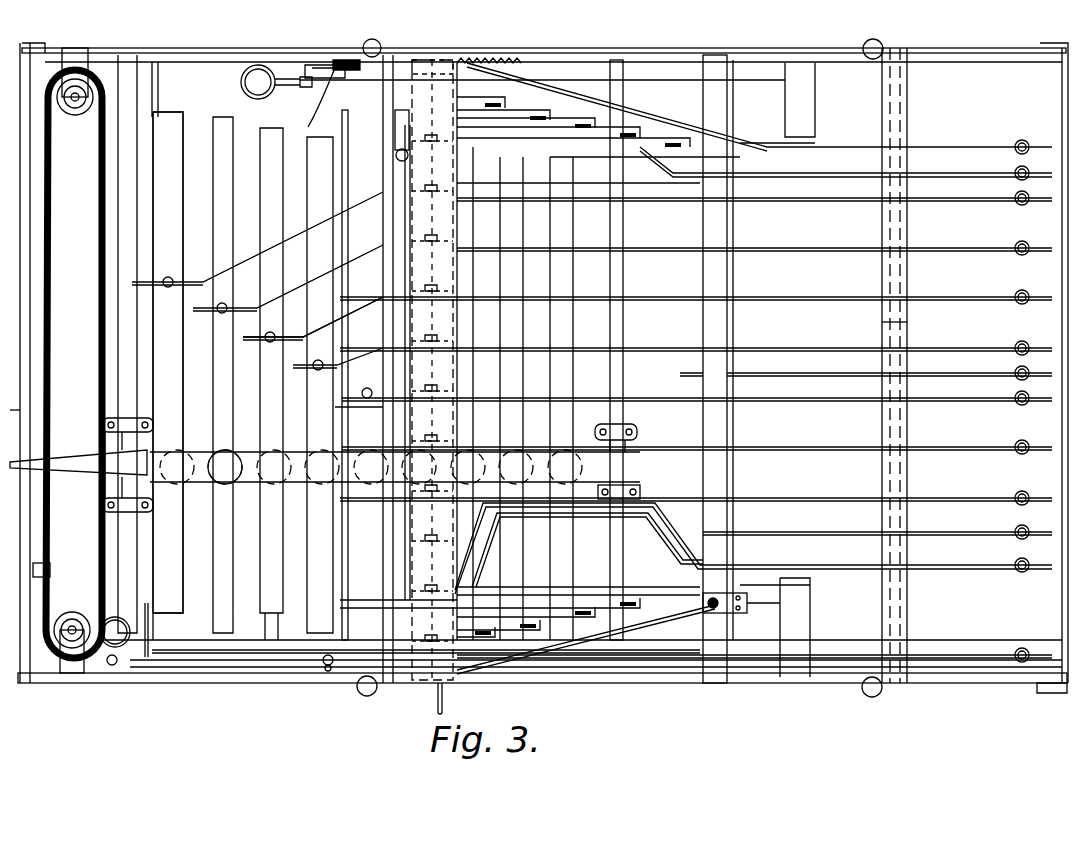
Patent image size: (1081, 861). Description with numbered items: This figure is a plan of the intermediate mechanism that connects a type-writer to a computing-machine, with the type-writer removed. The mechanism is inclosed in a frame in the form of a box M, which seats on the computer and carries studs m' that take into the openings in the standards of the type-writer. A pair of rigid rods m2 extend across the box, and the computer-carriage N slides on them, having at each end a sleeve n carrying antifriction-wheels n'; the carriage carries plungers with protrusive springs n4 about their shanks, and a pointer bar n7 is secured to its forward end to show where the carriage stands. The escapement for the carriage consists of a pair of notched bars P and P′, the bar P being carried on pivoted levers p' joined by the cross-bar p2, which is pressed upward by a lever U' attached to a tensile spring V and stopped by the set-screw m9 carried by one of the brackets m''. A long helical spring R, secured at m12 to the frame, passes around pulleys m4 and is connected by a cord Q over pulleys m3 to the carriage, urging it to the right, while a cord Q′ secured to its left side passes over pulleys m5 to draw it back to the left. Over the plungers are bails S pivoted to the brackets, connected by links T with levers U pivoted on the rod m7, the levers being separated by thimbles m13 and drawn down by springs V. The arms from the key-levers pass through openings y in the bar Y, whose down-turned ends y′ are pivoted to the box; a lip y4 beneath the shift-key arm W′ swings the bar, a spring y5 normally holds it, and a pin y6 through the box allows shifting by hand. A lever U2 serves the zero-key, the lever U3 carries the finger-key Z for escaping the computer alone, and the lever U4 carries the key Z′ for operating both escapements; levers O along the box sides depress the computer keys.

The lever O is at (118, 62).
The long helical spring R is at (74, 364).
The pulley m4 is at (75, 115).
The spring-securing point m12 is at (50, 555).
The key Z′ is at (125, 625).
The pulley m3 is at (120, 664).
The bail S is at (180, 346).
The cord or strap Q is at (340, 527).
The cord or strip Q′ is at (340, 408).
The finger-key Z is at (276, 82).
The depending arm W′ is at (333, 63).
The pulley m5 is at (350, 60).
The lip y4 is at (312, 125).
The notched escapement-bar P′ is at (402, 173).
The notched escapement-bar P is at (396, 130).
The bar Y is at (432, 370).
The opening y is at (434, 336).
The downturned arm y′ is at (436, 62).
The spring y5 is at (478, 60).
The pin y6 is at (436, 698).
The link T is at (270, 343).
The pointer bar n7 is at (78, 460).
The sleeve n is at (379, 465).
The computer-carriage N is at (243, 452).
The protrusive spring n4 is at (238, 470).
The antifriction-wheel n' is at (631, 437).
The rigid rod m2 is at (626, 276).
The cross-bar p2 is at (720, 472).
The lever U3 is at (846, 146).
The pivoted lever p' is at (586, 376).
The lever U2 is at (932, 174).
The lever U is at (754, 225).
The lever U' is at (866, 367).
The lever U4 is at (845, 647).
The tensile spring V is at (1016, 453).
The bracket m'' is at (797, 370).
The set-screw m9 is at (703, 603).
The rod m7 is at (897, 603).
The thimble m13 is at (895, 322).
The stud m' is at (616, 370).
The box M is at (10, 379).